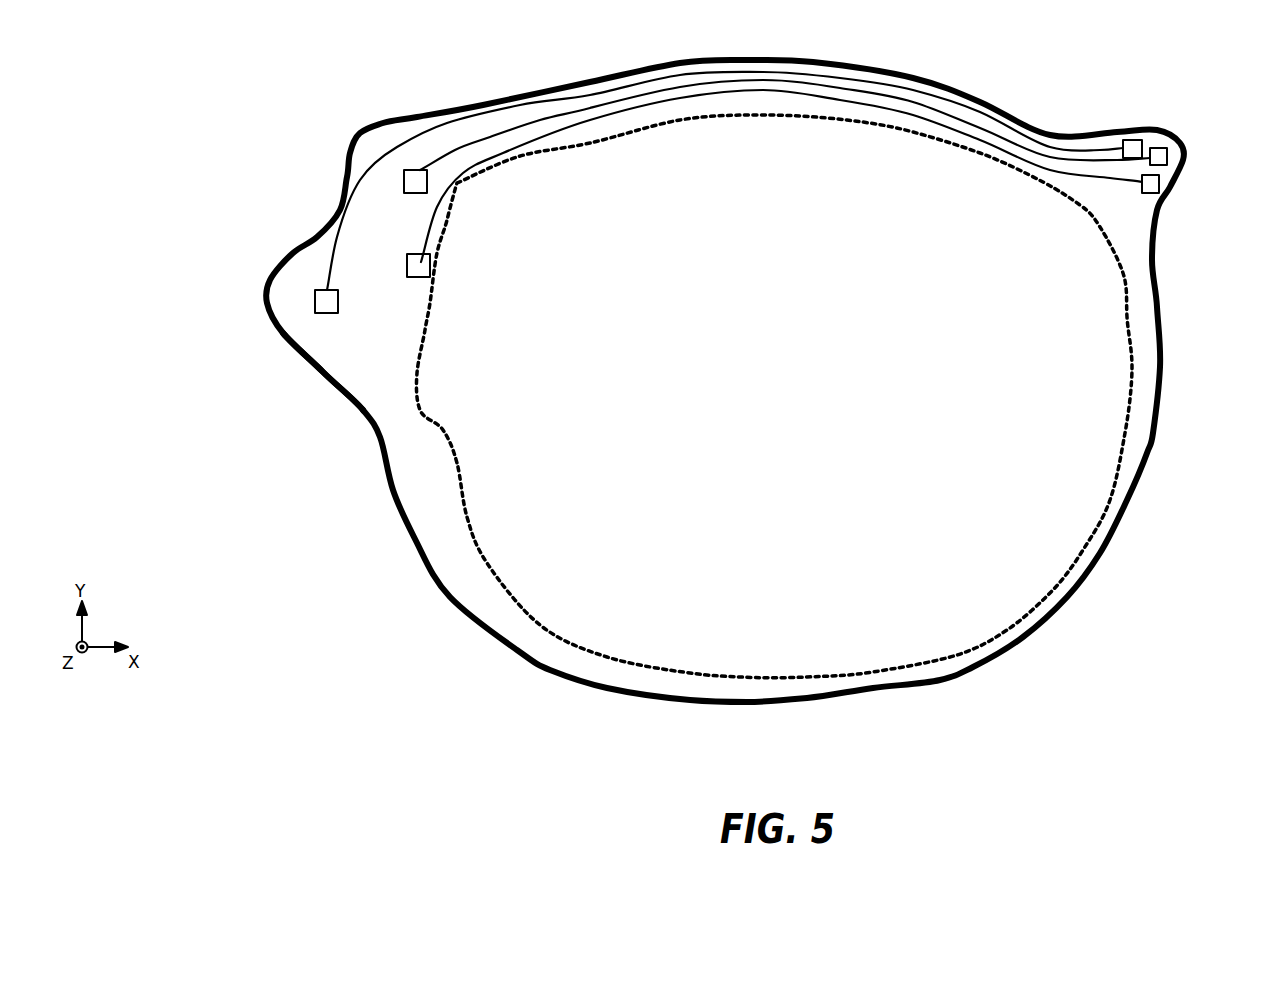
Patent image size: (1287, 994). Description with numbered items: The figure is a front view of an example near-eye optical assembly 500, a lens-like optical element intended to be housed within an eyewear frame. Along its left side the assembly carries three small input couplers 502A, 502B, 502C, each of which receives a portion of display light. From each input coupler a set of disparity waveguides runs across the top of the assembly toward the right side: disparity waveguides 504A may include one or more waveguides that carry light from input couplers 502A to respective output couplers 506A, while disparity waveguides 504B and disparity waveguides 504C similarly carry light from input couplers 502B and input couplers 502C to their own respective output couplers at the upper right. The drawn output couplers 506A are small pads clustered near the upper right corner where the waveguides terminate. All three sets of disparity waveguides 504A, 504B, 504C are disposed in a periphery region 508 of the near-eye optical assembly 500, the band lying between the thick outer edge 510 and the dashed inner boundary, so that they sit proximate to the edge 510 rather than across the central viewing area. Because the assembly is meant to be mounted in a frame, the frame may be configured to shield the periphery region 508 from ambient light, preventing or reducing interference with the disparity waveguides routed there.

The near-eye optical assembly 500 is at (1160, 305).
The input coupler 502A is at (322, 295).
The input coupler 502B is at (412, 194).
The input coupler 502C is at (419, 278).
The disparity waveguides 504A is at (488, 120).
The disparity waveguides 504B is at (518, 127).
The disparity waveguides 504C is at (553, 127).
The output coupler 506A is at (1127, 141).
The periphery region 508 is at (418, 502).
The edge 510 is at (380, 437).